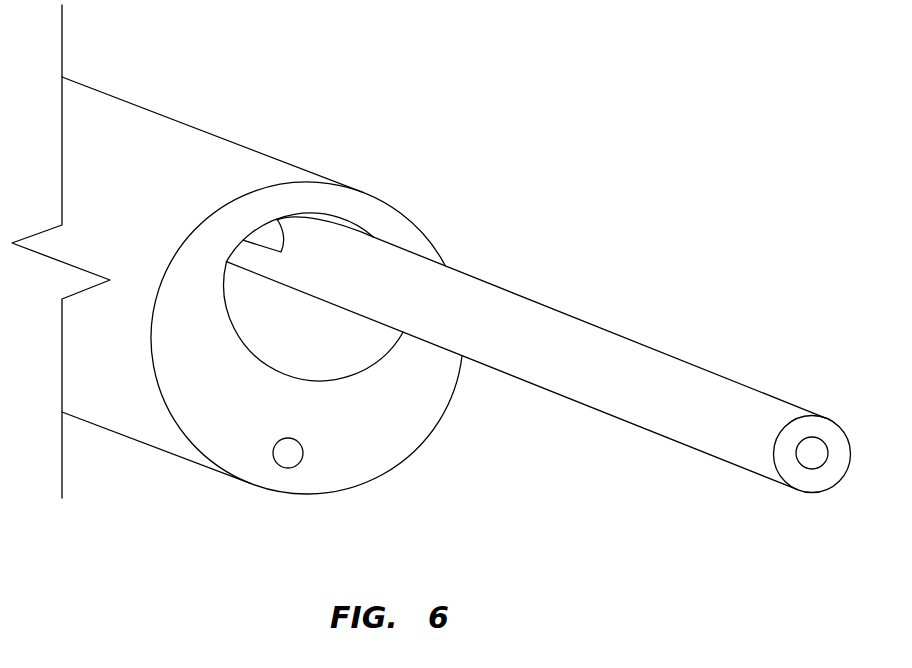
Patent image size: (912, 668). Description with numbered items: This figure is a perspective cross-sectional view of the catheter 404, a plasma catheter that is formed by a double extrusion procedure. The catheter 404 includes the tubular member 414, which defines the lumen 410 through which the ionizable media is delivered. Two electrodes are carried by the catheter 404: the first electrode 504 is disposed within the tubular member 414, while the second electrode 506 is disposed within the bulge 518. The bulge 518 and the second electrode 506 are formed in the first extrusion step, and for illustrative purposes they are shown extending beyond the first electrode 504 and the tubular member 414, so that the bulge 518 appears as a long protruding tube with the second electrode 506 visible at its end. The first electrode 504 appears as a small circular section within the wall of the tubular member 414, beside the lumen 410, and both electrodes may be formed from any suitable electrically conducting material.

The catheter 404 is at (247, 107).
The lumen 410 is at (357, 352).
The tubular member 414 is at (387, 447).
The first electrode 504 is at (288, 458).
The second electrode 506 is at (815, 453).
The bulge 518 is at (598, 397).